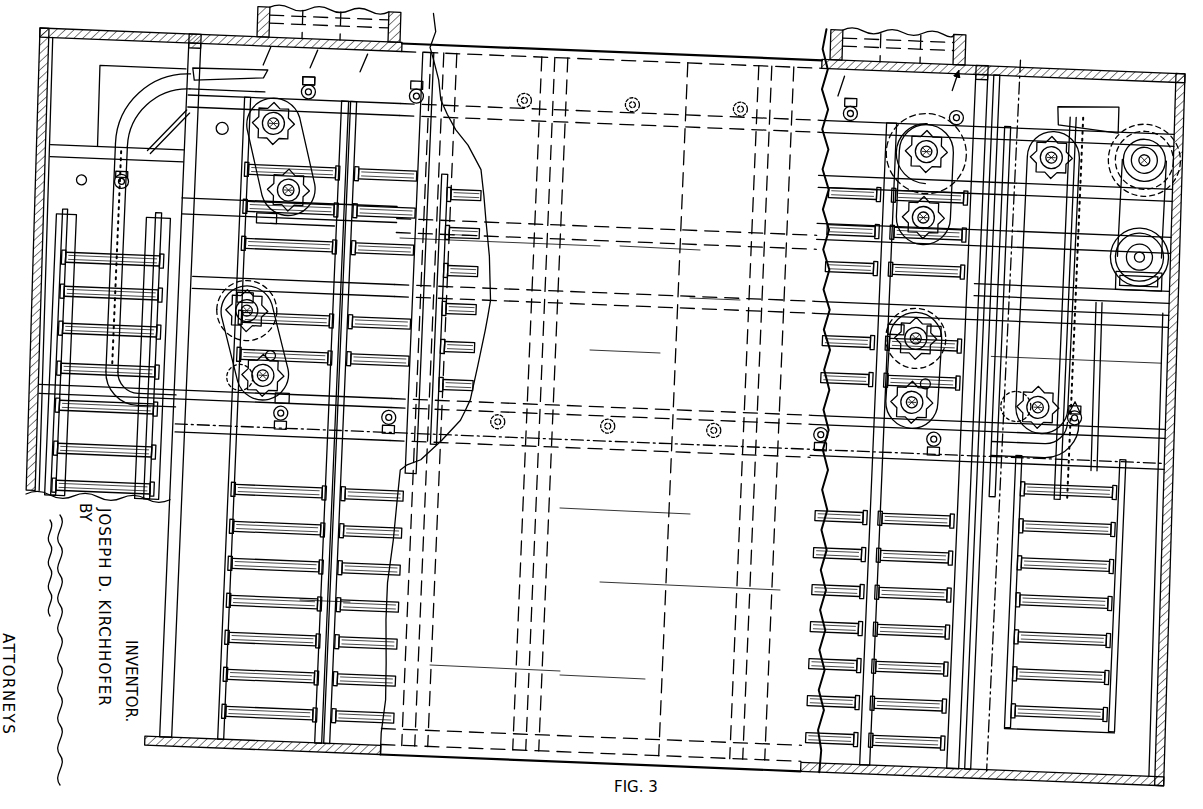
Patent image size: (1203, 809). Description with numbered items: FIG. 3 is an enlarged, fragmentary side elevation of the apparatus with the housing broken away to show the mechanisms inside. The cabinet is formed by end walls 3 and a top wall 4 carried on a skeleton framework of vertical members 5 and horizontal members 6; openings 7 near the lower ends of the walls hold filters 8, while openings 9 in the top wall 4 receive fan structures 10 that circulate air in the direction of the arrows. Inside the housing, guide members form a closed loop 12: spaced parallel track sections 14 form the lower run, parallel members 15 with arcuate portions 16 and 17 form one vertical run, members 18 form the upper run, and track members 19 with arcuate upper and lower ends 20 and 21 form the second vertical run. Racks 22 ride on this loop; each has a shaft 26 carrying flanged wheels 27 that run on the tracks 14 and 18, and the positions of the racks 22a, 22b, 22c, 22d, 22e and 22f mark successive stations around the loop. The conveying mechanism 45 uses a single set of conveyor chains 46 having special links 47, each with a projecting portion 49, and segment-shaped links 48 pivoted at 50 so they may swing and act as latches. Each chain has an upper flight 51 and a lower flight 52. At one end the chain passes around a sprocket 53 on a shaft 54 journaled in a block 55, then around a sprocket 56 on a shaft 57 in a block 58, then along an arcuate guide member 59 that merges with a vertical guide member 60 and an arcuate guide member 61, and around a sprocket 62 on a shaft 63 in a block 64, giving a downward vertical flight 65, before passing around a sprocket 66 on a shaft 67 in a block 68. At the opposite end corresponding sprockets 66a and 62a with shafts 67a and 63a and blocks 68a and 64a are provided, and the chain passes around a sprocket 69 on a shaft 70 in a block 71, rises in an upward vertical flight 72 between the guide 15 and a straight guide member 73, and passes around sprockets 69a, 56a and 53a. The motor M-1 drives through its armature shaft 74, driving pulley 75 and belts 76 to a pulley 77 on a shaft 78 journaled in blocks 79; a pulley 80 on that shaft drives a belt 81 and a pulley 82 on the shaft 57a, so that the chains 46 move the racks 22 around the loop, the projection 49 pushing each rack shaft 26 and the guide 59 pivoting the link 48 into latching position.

The end wall 3 is at (45, 470).
The top wall 4 is at (1018, 47).
The vertical member 5 is at (565, 96).
The horizontal member 6 is at (192, 44).
The opening 7 is at (1162, 700).
The filter 8 is at (1165, 745).
The opening 9 is at (850, 105).
The fan structure 10 is at (400, 28).
The closed loop 12 is at (940, 466).
The track section 14 is at (218, 420).
The guide member 15 is at (1098, 336).
The arcuate portion 16 is at (1055, 462).
The arcuate portion 17 is at (1070, 106).
The track member 18 is at (872, 105).
The track member 19 is at (100, 126).
The arcuate upper end 20 is at (150, 68).
The arcuate lower end 21 is at (123, 406).
The rack 22 is at (336, 744).
The rack 22a is at (894, 768).
The rack 22b is at (1044, 726).
The rack 22c is at (1013, 259).
The rack 22d is at (246, 228).
The rack 22e is at (165, 525).
The rack 22f is at (218, 526).
The shaft 26 is at (310, 88).
The flanged wheel 27 is at (303, 86).
The conveying mechanism 45 is at (892, 122).
The conveyor chain 46 is at (236, 286).
The link 47 is at (128, 183).
The link 48 is at (1100, 370).
The projecting portion 49 is at (100, 178).
The pivot 50 is at (135, 201).
The upper flight 51 is at (598, 224).
The lower flight 52 is at (607, 285).
The sprocket 53 is at (310, 188).
The sprocket 53a is at (900, 214).
The shaft 54 is at (290, 220).
The block 55 is at (280, 215).
The sprocket 56 is at (302, 130).
The sprocket 56a is at (893, 150).
The shaft 57 is at (252, 122).
The shaft 57a is at (955, 116).
The block 58 is at (248, 152).
The arcuate guide member 59 is at (165, 122).
The vertical guide member 60 is at (153, 358).
The arcuate guide member 61 is at (238, 378).
The sprocket 62 is at (258, 381).
The sprocket 62a is at (888, 400).
The shaft 63 is at (240, 361).
The shaft 63a is at (892, 377).
The block 64 is at (255, 363).
The block 64a is at (888, 418).
The vertical flight 65 is at (90, 256).
The sprocket 66 is at (272, 306).
The sprocket 66a is at (925, 306).
The shaft 67 is at (232, 301).
The shaft 67a is at (930, 331).
The block 68 is at (255, 273).
The block 68a is at (890, 352).
The sprocket 69 is at (1042, 282).
The sprocket 69a is at (1050, 166).
The shaft 70 is at (1040, 395).
The block 71 is at (1028, 406).
The vertical flight 72 is at (1068, 256).
The straight guide member 73 is at (1058, 318).
The armature shaft 74 is at (1141, 220).
The driving pulley 75 is at (1143, 246).
The belt 76 is at (1150, 211).
The pulley 77 is at (1146, 132).
The shaft 78 is at (1140, 150).
The block 79 is at (1150, 150).
The pulley 80 is at (1145, 115).
The belt 81 is at (1144, 149).
The pulley 82 is at (926, 145).
The motor M-1 is at (1133, 290).